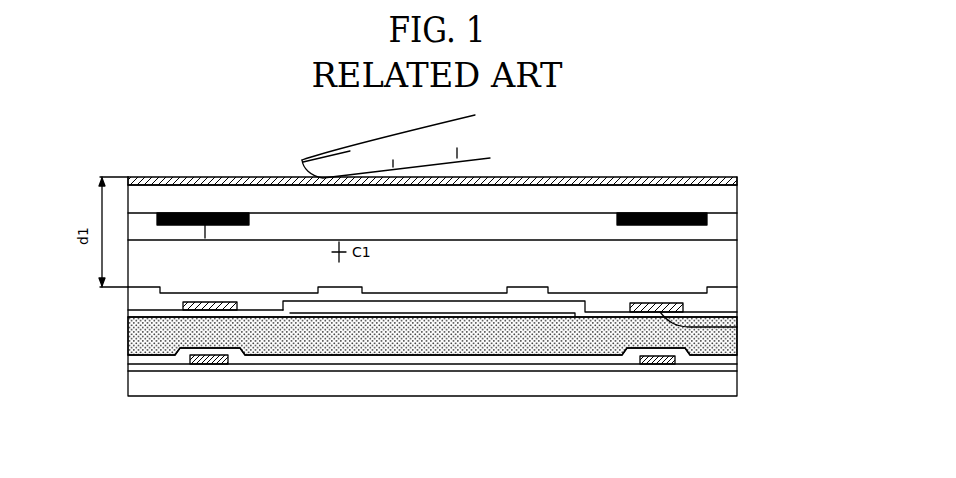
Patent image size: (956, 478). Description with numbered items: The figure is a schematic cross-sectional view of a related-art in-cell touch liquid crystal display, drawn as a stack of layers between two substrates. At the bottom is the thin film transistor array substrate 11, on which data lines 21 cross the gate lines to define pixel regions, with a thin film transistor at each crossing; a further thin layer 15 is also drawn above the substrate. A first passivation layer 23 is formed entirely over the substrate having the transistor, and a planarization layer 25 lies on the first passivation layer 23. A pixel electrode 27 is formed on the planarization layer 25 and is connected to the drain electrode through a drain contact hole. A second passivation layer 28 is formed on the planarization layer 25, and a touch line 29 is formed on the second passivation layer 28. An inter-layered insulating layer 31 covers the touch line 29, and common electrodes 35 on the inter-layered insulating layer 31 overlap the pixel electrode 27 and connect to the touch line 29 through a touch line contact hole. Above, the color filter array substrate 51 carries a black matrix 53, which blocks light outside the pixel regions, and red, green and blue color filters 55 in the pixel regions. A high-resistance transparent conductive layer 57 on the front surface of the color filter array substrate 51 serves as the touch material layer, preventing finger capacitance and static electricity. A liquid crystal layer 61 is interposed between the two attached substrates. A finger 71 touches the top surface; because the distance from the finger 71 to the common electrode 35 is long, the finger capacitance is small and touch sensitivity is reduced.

The thin film transistor array substrate 11 is at (737, 385).
The buffer layer 15 is at (737, 368).
The data line 21 is at (207, 364).
The first passivation layer 23 is at (737, 357).
The planarization layer 25 is at (737, 338).
The pixel electrode 27 is at (446, 317).
The second passivation layer 28 is at (737, 312).
The touch line 29 is at (128, 308).
The inter-layered insulating layer 31 is at (737, 300).
The common electrode 35 is at (737, 287).
The color filter array substrate 51 is at (737, 198).
The black matrix 53 is at (660, 238).
The color filter 55 is at (737, 225).
The transparent conductive layer 57 is at (737, 181).
The liquid crystal layer 61 is at (737, 263).
The finger 71 is at (367, 143).